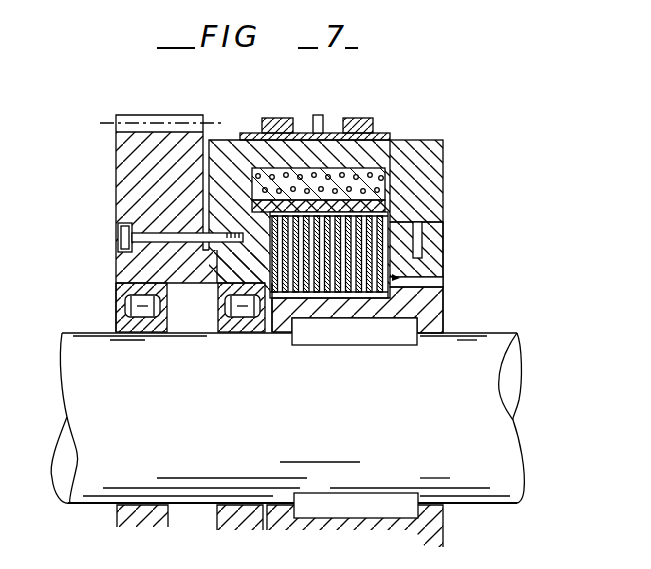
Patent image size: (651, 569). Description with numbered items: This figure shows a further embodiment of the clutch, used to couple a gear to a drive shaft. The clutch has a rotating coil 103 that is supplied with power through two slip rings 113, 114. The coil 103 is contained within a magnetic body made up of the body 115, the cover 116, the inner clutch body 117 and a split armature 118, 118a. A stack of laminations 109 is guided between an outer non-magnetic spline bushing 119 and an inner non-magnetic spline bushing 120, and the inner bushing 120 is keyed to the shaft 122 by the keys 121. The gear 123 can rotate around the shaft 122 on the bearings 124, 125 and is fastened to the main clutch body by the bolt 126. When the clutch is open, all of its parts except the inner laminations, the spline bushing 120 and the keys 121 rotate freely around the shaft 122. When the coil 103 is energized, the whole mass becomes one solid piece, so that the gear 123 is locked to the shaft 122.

The coil 103 is at (372, 182).
The stack of laminations 109 is at (400, 278).
The slip ring 113 is at (278, 117).
The slip ring 114 is at (360, 118).
The body 115 is at (228, 138).
The cover 116 is at (418, 140).
The inner clutch body 117 is at (255, 270).
The split armature 118 is at (435, 233).
The split armature 118a is at (435, 263).
The outer non-magnetic spline bushing 119 is at (372, 197).
The inner non-magnetic spline bushing 120 is at (443, 310).
The key 121 is at (330, 345).
The shaft 122 is at (497, 333).
The gear 123 is at (123, 165).
The bearing 124 is at (125, 308).
The bearing 125 is at (225, 308).
The bolt 126 is at (118, 238).